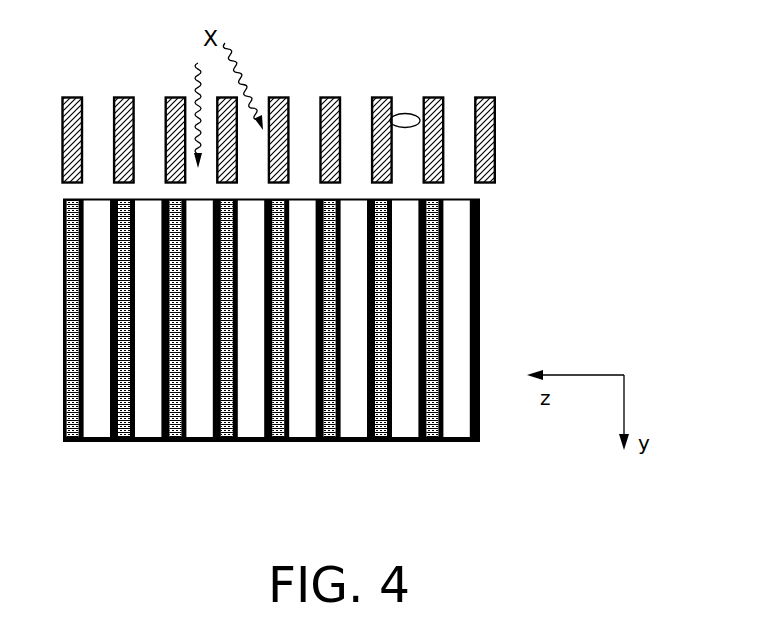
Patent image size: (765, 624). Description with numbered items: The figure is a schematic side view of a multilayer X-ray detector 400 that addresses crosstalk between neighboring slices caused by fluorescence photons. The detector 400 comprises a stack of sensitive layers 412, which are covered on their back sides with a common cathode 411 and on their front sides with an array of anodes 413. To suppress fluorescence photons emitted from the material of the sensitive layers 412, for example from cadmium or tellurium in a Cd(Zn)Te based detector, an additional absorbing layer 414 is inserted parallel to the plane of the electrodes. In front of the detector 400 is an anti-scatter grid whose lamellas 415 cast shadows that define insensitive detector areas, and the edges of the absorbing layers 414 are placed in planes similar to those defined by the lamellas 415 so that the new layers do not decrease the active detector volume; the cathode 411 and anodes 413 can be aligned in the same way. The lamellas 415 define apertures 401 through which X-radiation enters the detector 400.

The multilayer X-ray detector 400 is at (548, 75).
The aperture 401 is at (403, 113).
The common cathode 411 is at (425, 410).
The sensitive layer 412 is at (299, 423).
The anode 413 is at (392, 412).
The absorbing layer 414 is at (174, 442).
The lamella 415 is at (494, 163).